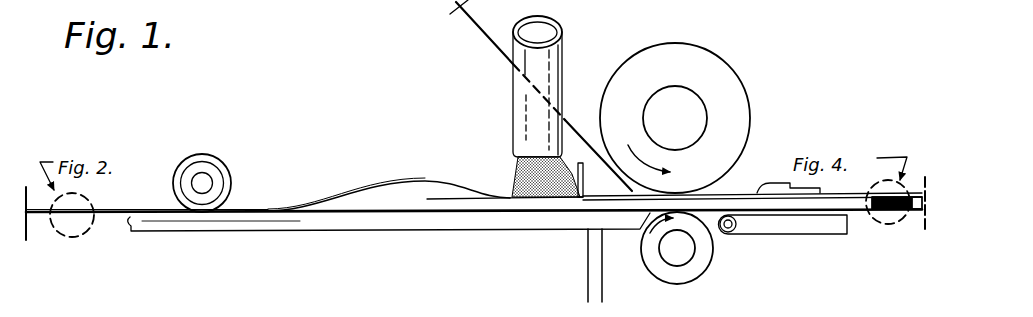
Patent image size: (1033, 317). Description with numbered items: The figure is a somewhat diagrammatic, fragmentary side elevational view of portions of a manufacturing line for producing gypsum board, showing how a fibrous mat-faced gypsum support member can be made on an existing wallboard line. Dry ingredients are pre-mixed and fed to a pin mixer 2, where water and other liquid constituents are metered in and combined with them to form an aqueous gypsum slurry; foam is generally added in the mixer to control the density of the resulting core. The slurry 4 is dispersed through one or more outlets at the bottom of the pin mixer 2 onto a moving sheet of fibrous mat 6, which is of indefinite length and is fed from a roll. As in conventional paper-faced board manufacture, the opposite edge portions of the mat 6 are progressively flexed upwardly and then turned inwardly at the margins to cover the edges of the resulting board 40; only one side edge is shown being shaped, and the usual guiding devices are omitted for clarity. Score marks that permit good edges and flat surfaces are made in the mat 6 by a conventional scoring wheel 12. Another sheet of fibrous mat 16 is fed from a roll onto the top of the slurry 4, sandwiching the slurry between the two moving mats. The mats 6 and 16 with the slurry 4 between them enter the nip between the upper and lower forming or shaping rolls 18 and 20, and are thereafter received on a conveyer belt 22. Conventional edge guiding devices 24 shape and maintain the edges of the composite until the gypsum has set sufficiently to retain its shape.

The pin mixer 2 is at (565, 54).
The slurry 4 is at (510, 170).
The fibrous mat 6 is at (115, 218).
The scoring wheel 12 is at (220, 170).
The fibrous mat 16 is at (480, 33).
The upper forming roll 18 is at (727, 87).
The lower forming roll 20 is at (688, 280).
The conveyer belt 22 is at (815, 239).
The edge guiding devices 24 is at (770, 182).
The board 40 is at (906, 222).